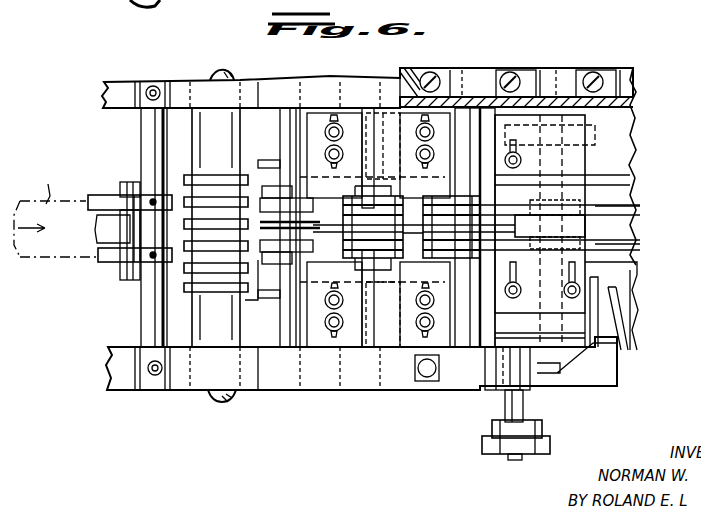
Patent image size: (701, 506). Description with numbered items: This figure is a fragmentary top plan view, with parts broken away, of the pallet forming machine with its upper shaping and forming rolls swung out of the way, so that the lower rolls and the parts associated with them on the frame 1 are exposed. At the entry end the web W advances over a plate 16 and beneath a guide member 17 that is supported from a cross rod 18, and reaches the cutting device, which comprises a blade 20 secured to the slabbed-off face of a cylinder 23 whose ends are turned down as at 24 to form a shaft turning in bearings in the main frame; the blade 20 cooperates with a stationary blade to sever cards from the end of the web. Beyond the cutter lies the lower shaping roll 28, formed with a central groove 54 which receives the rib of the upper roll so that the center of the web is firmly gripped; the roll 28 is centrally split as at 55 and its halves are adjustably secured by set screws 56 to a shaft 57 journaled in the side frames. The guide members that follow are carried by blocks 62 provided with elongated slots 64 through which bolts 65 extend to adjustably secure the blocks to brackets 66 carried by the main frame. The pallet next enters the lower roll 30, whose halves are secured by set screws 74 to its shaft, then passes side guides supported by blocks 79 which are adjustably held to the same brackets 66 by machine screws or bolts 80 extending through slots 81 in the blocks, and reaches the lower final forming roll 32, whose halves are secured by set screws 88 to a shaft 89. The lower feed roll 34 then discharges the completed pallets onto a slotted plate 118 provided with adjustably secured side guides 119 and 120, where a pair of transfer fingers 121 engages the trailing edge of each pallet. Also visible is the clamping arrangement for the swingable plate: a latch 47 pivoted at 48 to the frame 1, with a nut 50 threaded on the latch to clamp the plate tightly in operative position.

The frame 1 is at (112, 95).
The plate 16 is at (136, 186).
The guide member 17 is at (96, 200).
The cross rod 18 is at (152, 130).
The blade 20 is at (248, 300).
The cylinder 23 is at (216, 227).
The turned down ends 24 is at (222, 70).
The lower roll 28 is at (280, 250).
The lower roll 30 is at (366, 200).
The lower roll 32 is at (444, 200).
The lower feed roll 34 is at (556, 222).
The latch 47 is at (514, 462).
The pivot 48 is at (492, 388).
The nut 50 is at (552, 440).
The central groove 54 is at (280, 214).
The split 55 is at (318, 252).
The set screws 56 is at (290, 162).
The shaft 57 is at (292, 138).
The blocks 62 is at (320, 122).
The elongated slots 64 is at (333, 345).
The bolts 65 is at (340, 150).
The brackets 66 is at (382, 142).
The set screws 74 is at (383, 230).
The blocks 79 is at (438, 120).
The machine screws or bolts 80 is at (416, 318).
The slots 81 is at (435, 286).
The set screws 88 is at (545, 231).
The shaft 89 is at (468, 130).
The slotted plate 118 is at (642, 218).
The side guide 119 is at (626, 172).
The side guide 120 is at (624, 266).
The transfer fingers 121 is at (617, 225).
The web W is at (55, 215).